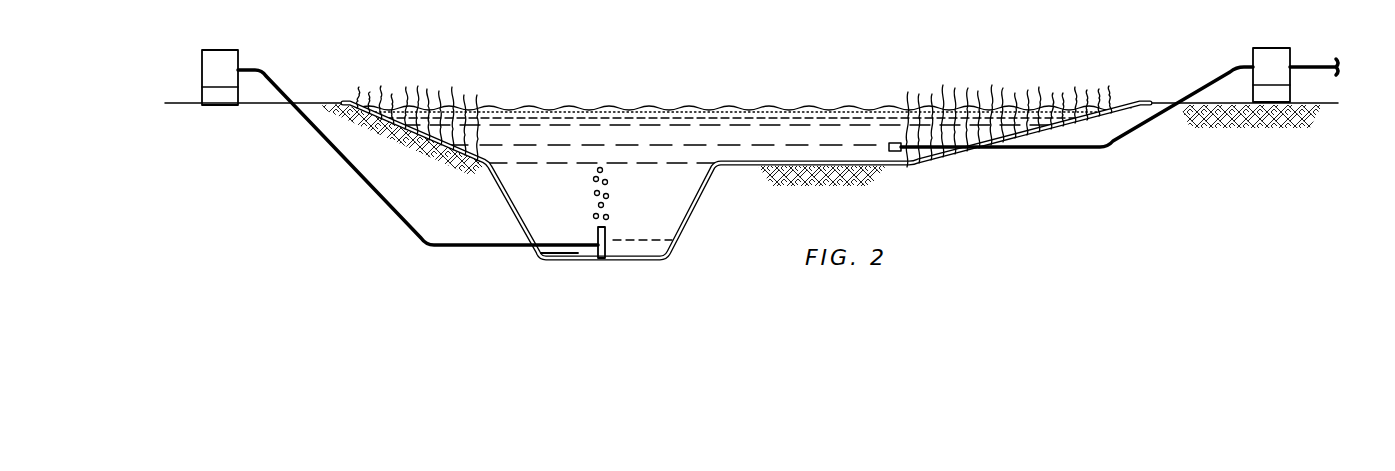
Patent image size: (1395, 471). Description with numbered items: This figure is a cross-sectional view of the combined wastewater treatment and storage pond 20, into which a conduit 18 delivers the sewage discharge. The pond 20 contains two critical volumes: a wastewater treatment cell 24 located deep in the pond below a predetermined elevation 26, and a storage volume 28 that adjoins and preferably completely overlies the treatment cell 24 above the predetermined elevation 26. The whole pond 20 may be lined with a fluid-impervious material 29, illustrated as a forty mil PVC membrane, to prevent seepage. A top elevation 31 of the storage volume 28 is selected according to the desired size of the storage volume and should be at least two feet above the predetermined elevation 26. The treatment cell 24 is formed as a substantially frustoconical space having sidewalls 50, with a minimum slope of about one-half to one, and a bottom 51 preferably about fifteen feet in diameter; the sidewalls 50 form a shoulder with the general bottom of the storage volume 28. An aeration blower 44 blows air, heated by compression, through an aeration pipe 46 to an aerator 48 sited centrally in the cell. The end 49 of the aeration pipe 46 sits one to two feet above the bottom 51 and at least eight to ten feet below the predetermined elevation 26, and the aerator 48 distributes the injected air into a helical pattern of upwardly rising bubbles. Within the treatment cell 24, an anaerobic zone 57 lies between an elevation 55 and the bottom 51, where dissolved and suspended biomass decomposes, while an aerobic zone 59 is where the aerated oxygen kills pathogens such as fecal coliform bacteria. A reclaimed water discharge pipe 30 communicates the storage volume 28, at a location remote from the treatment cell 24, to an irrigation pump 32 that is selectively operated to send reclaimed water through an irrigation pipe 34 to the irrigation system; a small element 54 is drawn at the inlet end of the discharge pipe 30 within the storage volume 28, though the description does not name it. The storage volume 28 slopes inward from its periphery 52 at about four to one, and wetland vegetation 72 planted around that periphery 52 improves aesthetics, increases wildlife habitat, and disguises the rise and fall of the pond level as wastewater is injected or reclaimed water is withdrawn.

The conduit 18 is at (557, 265).
The wastewater treatment and storage pond 20 is at (742, 88).
The wastewater treatment cell 24 is at (652, 199).
The predetermined elevation 26 is at (570, 161).
The storage volume 28 is at (777, 149).
The fluid-impervious material 29 is at (700, 185).
The reclaimed water discharge pipe 30 is at (1052, 149).
The top elevation 31 is at (672, 105).
The irrigation pump 32 is at (1272, 48).
The irrigation pipe 34 is at (1313, 65).
The aeration blower 44 is at (217, 50).
The aeration pipe 46 is at (367, 189).
The aerator 48 is at (609, 232).
The end of the aeration pipe 49 is at (597, 232).
The sidewalls 50 is at (513, 210).
The bottom 51 is at (623, 262).
The periphery 52 is at (353, 102).
The sensor 54 is at (893, 152).
The elevation 55 is at (674, 228).
The anaerobic zone 57 is at (665, 258).
The aerobic zone 59 is at (527, 199).
The wetland vegetation 72 is at (470, 105).